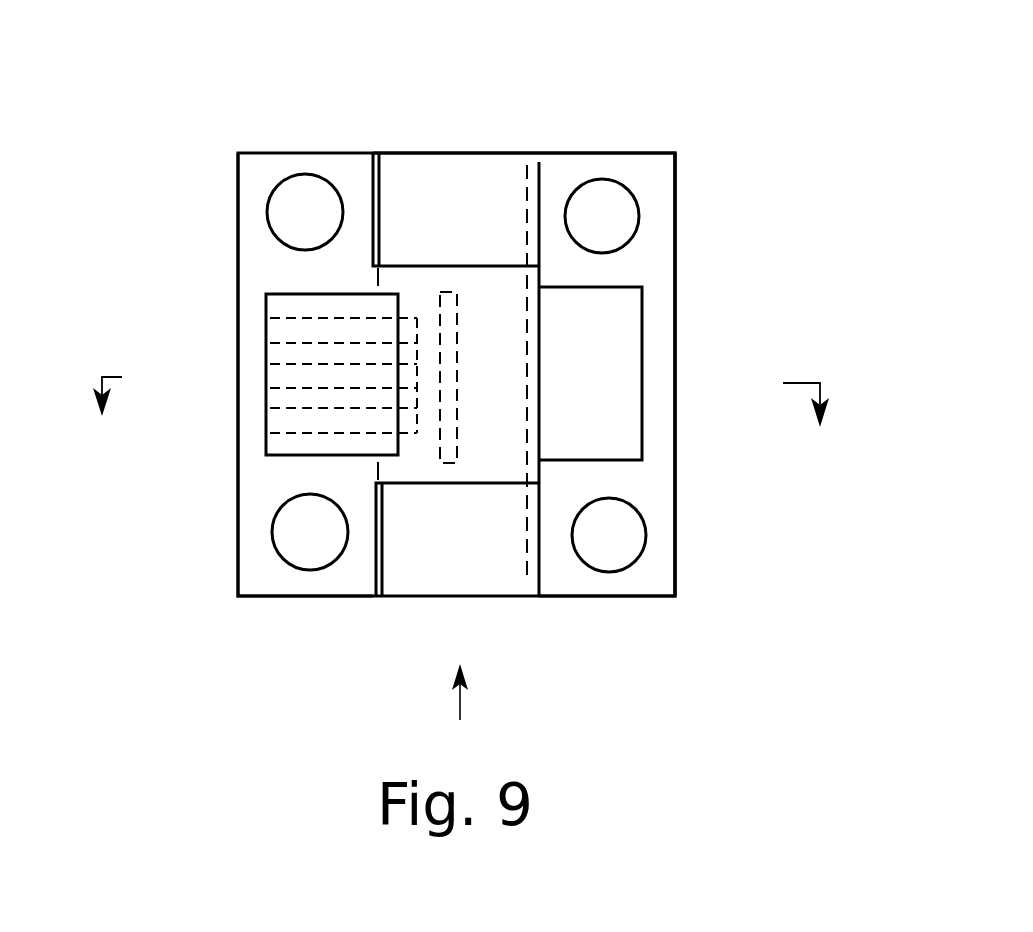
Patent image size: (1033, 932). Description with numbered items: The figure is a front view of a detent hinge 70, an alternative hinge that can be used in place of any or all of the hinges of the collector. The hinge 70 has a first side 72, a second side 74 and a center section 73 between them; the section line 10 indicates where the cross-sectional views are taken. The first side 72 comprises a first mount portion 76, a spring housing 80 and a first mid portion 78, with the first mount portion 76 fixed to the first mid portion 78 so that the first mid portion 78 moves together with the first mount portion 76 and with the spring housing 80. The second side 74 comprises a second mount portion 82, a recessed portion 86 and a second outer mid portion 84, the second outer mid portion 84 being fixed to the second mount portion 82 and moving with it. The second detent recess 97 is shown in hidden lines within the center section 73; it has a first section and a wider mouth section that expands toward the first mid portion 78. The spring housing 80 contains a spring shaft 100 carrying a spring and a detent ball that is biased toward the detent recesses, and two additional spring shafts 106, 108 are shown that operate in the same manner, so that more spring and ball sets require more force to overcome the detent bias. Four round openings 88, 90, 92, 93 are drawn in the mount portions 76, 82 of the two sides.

The detent hinge 70 is at (702, 104).
The first side 72 is at (247, 170).
The second side 74 is at (665, 173).
The first mount portion 76 is at (353, 180).
The first mid portion 78 is at (420, 460).
The spring housing 80 is at (308, 310).
The second mount portion 82 is at (660, 258).
The second outer mid portion 84 is at (452, 180).
The recessed portion 86 is at (615, 410).
The first fastener hole 88 is at (312, 197).
The second fastener hole 90 is at (305, 560).
The third fastener hole 92 is at (604, 190).
The fourth fastener hole 93 is at (615, 555).
The second detent recess 97 is at (457, 300).
The spring shaft 100 is at (303, 378).
The spring shaft 106 is at (283, 333).
The spring shaft 108 is at (285, 420).
The center section 73 is at (464, 711).
The section line 10 is at (461, 402).